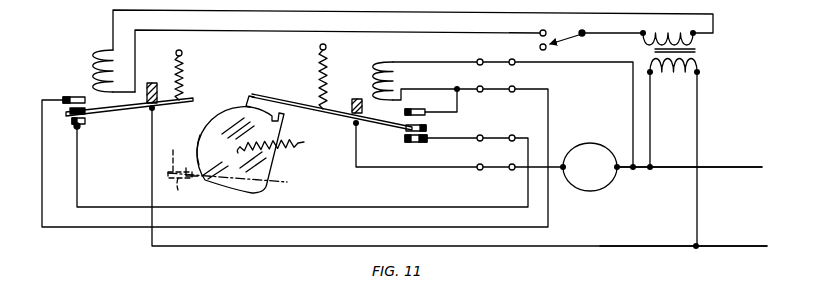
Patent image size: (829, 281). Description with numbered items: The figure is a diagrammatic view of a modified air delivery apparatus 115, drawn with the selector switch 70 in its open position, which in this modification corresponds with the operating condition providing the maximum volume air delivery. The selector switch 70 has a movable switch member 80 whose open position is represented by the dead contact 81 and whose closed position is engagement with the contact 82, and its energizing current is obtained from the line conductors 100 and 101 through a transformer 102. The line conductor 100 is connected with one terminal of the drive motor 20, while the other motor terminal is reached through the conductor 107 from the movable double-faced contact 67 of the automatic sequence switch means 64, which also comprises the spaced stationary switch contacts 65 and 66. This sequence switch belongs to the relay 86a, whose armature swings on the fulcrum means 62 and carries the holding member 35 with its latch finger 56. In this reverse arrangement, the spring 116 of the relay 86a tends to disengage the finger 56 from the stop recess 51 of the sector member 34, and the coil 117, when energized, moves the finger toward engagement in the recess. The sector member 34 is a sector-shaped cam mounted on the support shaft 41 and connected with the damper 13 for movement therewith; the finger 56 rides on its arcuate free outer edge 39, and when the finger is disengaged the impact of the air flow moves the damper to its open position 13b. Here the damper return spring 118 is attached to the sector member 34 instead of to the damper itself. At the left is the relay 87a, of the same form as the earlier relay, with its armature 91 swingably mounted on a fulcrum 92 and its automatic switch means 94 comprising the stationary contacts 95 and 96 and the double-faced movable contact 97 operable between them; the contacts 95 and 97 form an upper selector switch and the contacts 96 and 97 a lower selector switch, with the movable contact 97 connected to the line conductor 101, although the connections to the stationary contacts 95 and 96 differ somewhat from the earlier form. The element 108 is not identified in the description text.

The relay 87a is at (82, 46).
The stationary contact 95 is at (75, 95).
The movable contact 97 is at (70, 111).
The stationary contact 96 is at (73, 128).
The automatic switch means 94 is at (83, 113).
The armature 91 is at (122, 112).
The fulcrum 92 is at (158, 85).
The spring 108 is at (184, 64).
The air delivery apparatus 115 is at (317, 85).
The holding member 35 is at (288, 99).
The latch finger 56 is at (248, 96).
The spring 116 is at (327, 66).
The fulcrum means 62 is at (351, 101).
The sector member 34 is at (226, 121).
The arcuate free outer edge 39 is at (196, 157).
The damper return spring 118 is at (290, 146).
The stop recess 51 is at (190, 168).
The damper 13 is at (175, 164).
The open position of the damper 13b is at (192, 189).
The support shaft 41 is at (278, 182).
The relay 86a is at (410, 69).
The coil 117 is at (393, 68).
The conductor 107 is at (413, 144).
The automatic sequence switch means 64 is at (413, 129).
The stationary switch contact 65 is at (422, 111).
The movable double-faced contact 67 is at (426, 128).
The stationary switch contact 66 is at (416, 143).
The drive motor 20 is at (596, 191).
The line conductor 100 is at (720, 167).
The line conductor 101 is at (722, 246).
The dead contact 81 is at (541, 30).
The contact 82 is at (539, 47).
The selector switch 70 is at (581, 33).
The movable switch member 80 is at (568, 41).
The transformer 102 is at (703, 52).